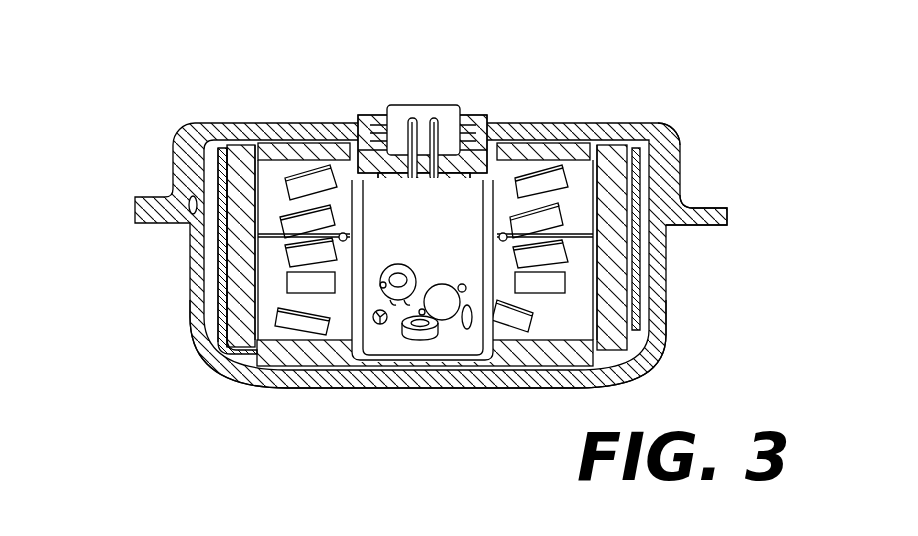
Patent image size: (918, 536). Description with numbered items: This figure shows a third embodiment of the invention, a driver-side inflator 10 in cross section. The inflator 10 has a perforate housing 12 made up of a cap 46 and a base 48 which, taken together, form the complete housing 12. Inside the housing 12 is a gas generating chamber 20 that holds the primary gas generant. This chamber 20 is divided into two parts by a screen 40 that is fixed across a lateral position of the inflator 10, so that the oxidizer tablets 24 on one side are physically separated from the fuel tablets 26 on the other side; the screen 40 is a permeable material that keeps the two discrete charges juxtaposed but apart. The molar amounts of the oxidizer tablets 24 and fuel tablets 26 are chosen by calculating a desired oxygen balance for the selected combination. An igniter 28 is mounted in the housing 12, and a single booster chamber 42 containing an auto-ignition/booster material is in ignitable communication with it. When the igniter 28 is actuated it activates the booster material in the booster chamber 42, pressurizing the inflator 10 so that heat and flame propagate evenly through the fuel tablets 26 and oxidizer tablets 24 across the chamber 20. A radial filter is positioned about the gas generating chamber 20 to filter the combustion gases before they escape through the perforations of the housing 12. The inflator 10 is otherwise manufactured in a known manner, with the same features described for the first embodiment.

The inflator 10 is at (688, 120).
The perforate housing 12 is at (665, 268).
The gas generating chamber 20 is at (270, 180).
The oxidizer tablets 24 is at (545, 173).
The fuel tablets 26 is at (553, 282).
The igniter 28 is at (412, 117).
The screen 40 is at (267, 234).
The booster chamber 42 is at (392, 333).
The cap 46 is at (665, 337).
The base 48 is at (688, 160).